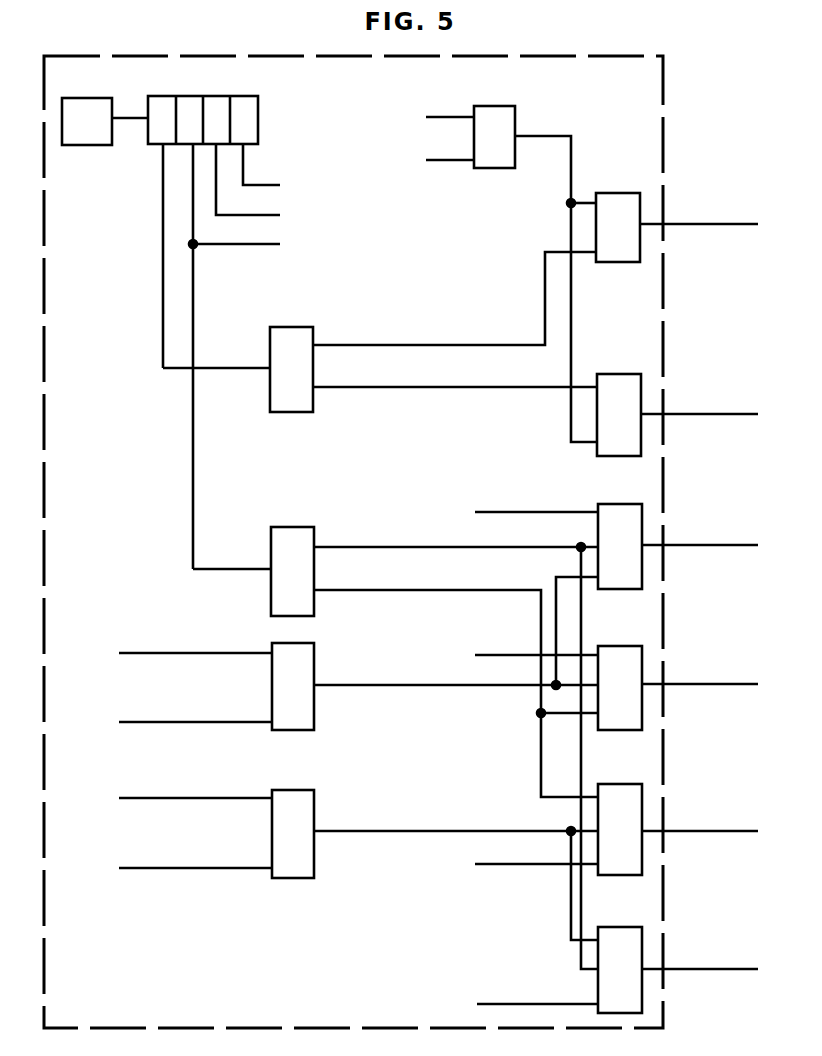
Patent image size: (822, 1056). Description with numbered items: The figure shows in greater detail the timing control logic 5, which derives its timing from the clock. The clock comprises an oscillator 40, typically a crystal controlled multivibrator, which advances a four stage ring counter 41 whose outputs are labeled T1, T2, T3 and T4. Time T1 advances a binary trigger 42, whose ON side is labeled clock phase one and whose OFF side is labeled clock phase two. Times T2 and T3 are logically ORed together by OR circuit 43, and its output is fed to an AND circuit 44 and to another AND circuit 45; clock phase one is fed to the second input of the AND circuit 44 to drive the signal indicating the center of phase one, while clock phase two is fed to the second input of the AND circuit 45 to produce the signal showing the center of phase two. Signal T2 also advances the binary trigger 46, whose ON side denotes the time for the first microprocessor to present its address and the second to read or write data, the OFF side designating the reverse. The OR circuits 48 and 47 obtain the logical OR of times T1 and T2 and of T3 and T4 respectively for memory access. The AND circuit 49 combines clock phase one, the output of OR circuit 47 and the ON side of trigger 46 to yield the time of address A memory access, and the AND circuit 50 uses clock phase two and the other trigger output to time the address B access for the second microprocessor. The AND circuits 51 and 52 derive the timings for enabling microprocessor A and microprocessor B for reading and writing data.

The timing control logic 5 is at (663, 113).
The oscillator 40 is at (88, 97).
The ring counter 41 is at (259, 122).
The binary trigger 42 is at (273, 327).
The OR circuit 43 is at (517, 112).
The AND circuit 44 is at (608, 193).
The AND circuit 45 is at (618, 374).
The binary trigger 46 is at (275, 527).
The OR circuit 47 is at (316, 660).
The OR circuit 48 is at (316, 805).
The AND circuit 49 is at (612, 504).
The AND circuit 50 is at (610, 646).
The AND circuit 51 is at (610, 784).
The AND circuit 52 is at (610, 927).